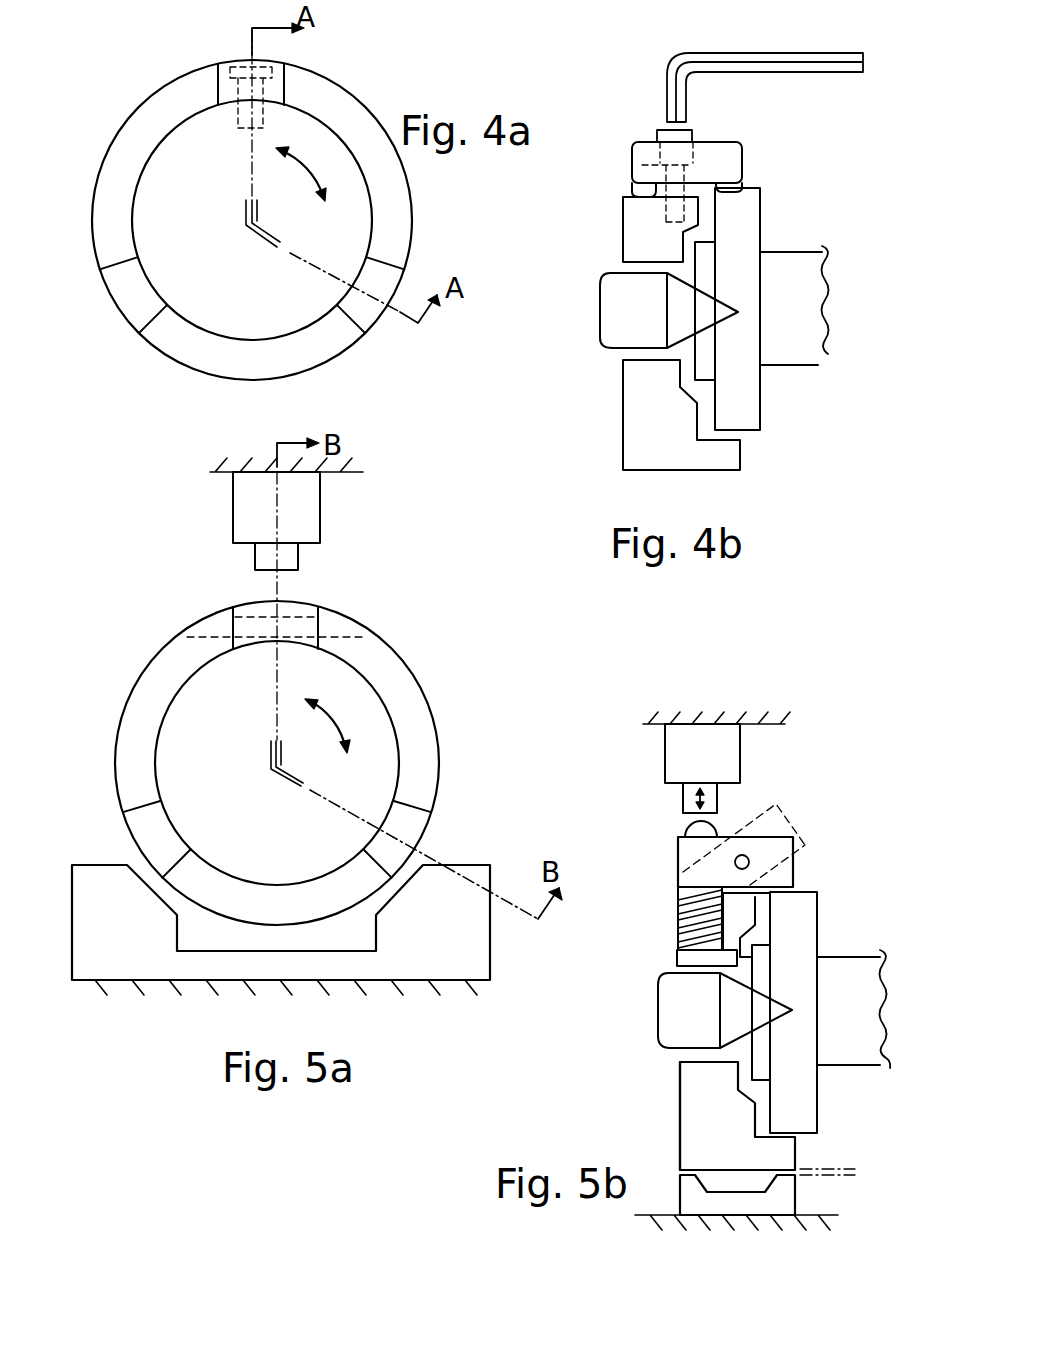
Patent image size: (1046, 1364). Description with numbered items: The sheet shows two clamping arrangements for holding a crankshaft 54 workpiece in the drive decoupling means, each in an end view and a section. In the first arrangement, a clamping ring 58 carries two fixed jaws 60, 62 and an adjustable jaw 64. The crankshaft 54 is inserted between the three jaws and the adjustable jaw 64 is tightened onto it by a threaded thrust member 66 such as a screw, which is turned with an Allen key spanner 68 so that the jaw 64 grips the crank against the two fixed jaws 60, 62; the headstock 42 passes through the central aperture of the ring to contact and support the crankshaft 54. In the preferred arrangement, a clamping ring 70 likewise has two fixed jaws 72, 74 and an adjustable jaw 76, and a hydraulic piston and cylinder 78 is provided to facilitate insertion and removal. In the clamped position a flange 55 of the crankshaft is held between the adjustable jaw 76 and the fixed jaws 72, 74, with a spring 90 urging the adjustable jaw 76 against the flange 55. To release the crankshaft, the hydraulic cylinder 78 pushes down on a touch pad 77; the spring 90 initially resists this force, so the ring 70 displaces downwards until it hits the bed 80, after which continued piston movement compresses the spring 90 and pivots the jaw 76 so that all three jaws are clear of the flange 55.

In FIG. 4b, the headstock 42 is at (627, 333).
In FIG. 5b, the headstock 42 is at (677, 988).
In FIG. 4b, the crankshaft 54 is at (816, 372).
In FIG. 5b, the crankshaft 54 is at (882, 1048).
In FIG. 5b, the flange 55 is at (812, 905).
In FIG. 4a, the clamping ring 58 is at (172, 78).
In FIG. 4a, the fixed jaw 60 is at (137, 307).
In FIG. 4a, the fixed jaw 62 is at (369, 312).
In FIG. 4b, the fixed jaw 62 is at (733, 455).
In FIG. 4a, the adjustable jaw 64 is at (282, 95).
In FIG. 4b, the adjustable jaw 64 is at (742, 165).
In FIG. 4b, the threaded thrust member 66 is at (632, 165).
In FIG. 4b, the Allen key spanner 68 is at (670, 57).
In FIG. 5a, the clamping ring 70 is at (178, 630).
In FIG. 5b, the clamping ring 70 is at (660, 1090).
In FIG. 5a, the fixed jaw 72 is at (136, 845).
In FIG. 5a, the fixed jaw 74 is at (408, 830).
In FIG. 5b, the fixed jaw 74 is at (788, 1148).
In FIG. 5a, the adjustable jaw 76 is at (305, 622).
In FIG. 5b, the adjustable jaw 76 is at (795, 840).
In FIG. 5b, the touch pad 77 is at (687, 832).
In FIG. 5a, the hydraulic piston and cylinder 78 is at (310, 512).
In FIG. 5b, the hydraulic piston and cylinder 78 is at (740, 752).
In FIG. 5a, the bed 80 is at (140, 960).
In FIG. 5b, the bed 80 is at (795, 1203).
In FIG. 5b, the spring 90 is at (680, 912).